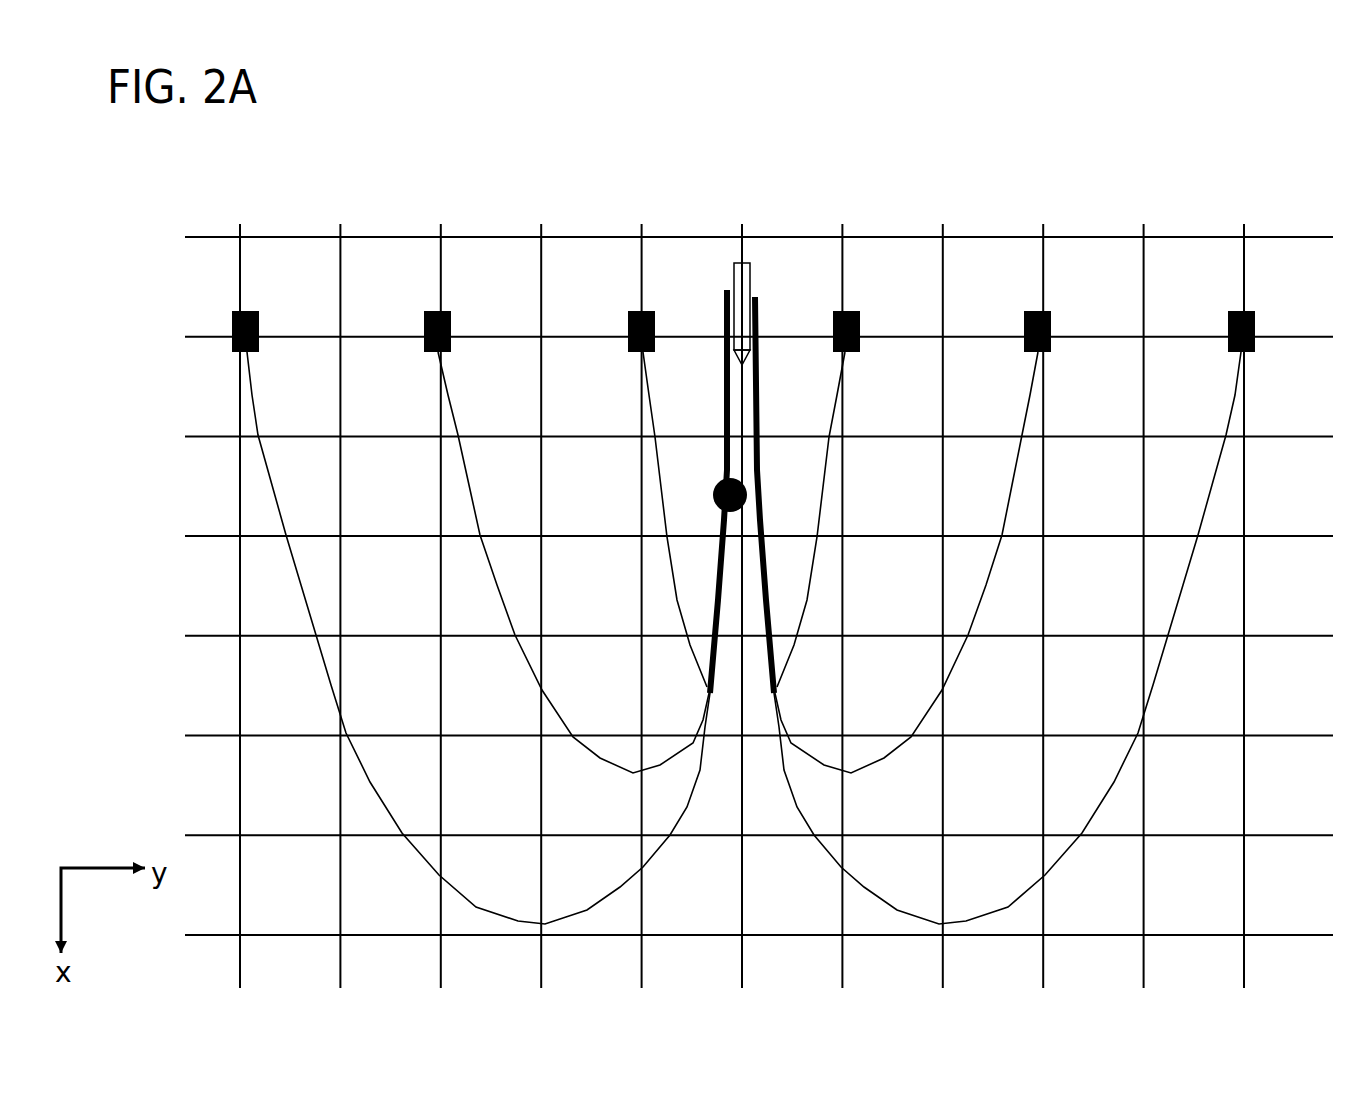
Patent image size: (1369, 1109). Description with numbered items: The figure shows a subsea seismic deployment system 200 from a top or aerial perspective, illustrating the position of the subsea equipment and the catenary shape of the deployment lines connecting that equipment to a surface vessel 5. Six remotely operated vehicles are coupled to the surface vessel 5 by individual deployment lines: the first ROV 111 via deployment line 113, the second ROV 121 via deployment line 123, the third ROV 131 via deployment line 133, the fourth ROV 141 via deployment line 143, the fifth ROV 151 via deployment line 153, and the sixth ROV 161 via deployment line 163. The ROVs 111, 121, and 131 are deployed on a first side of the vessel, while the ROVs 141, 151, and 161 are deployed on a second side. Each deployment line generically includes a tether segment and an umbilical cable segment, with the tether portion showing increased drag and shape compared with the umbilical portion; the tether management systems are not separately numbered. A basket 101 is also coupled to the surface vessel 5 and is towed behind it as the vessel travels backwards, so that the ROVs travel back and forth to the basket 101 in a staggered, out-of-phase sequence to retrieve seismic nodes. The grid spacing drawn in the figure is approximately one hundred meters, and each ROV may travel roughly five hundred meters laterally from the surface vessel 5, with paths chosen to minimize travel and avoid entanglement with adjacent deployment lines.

The surface vessel 5 is at (743, 300).
The basket 101 is at (714, 497).
The first ROV 111 is at (245, 311).
The deployment line 113 is at (318, 664).
The second ROV 121 is at (437, 311).
The deployment line 123 is at (488, 556).
The third ROV 131 is at (641, 311).
The deployment line 133 is at (672, 585).
The fourth ROV 141 is at (846, 311).
The deployment line 143 is at (808, 612).
The fifth ROV 151 is at (1037, 311).
The deployment line 153 is at (993, 583).
The sixth ROV 161 is at (1242, 311).
The deployment line 163 is at (1217, 492).
The electrode arrangement 200 is at (770, 114).